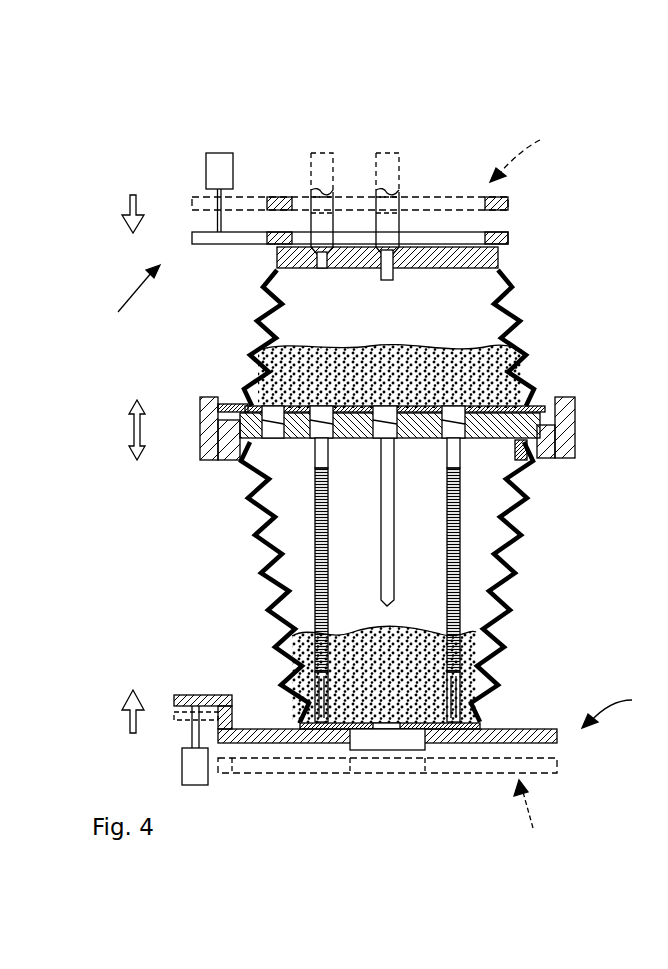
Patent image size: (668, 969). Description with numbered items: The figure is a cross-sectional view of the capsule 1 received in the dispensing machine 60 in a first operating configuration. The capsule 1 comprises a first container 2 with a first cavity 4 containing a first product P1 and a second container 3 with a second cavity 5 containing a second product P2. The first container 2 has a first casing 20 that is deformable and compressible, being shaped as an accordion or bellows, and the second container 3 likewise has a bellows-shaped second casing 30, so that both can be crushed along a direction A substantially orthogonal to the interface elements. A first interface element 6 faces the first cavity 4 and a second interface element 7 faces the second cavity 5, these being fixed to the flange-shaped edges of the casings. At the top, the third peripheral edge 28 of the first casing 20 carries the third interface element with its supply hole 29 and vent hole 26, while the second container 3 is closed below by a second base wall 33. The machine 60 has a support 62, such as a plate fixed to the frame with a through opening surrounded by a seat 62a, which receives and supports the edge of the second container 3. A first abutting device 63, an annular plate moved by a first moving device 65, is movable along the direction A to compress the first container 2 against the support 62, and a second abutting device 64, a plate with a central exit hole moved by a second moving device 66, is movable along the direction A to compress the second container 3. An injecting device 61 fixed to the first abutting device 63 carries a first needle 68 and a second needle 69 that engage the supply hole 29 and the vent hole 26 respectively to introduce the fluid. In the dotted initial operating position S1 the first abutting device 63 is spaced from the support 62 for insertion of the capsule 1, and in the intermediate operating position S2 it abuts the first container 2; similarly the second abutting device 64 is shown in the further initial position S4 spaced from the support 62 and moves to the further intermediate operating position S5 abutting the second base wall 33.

The capsule 1 is at (576, 176).
The first container 2 is at (403, 339).
The second container 3 is at (522, 599).
The first cavity 4 is at (470, 325).
The second cavity 5 is at (361, 550).
The first interface element 6 is at (557, 420).
The second interface element 7 is at (298, 443).
The first casing 20 is at (528, 318).
The vent hole 26 is at (338, 275).
The third peripheral edge 28 is at (497, 262).
The supply hole 29 is at (372, 272).
The second casing 30 is at (402, 585).
The second base wall 33 is at (473, 730).
The dispensing machine 60 is at (174, 148).
The injecting device 61 is at (435, 167).
The support 62 is at (217, 458).
The seat 62a is at (518, 468).
The first abutting device 63 is at (242, 240).
The second abutting device 64 is at (338, 732).
The first moving device 65 is at (220, 165).
The second moving device 66 is at (197, 778).
The first needle 68 is at (386, 200).
The second needle 69 is at (322, 197).
The first product P1 is at (490, 385).
The second product P2 is at (343, 665).
The direction A is at (122, 430).
The initial operating position S1 is at (528, 148).
The intermediate operating position S2 is at (122, 302).
The further initial position S4 is at (396, 809).
The further intermediate operating position S5 is at (391, 708).